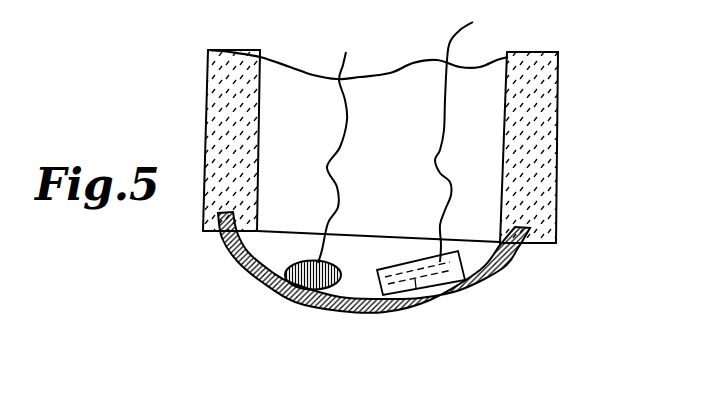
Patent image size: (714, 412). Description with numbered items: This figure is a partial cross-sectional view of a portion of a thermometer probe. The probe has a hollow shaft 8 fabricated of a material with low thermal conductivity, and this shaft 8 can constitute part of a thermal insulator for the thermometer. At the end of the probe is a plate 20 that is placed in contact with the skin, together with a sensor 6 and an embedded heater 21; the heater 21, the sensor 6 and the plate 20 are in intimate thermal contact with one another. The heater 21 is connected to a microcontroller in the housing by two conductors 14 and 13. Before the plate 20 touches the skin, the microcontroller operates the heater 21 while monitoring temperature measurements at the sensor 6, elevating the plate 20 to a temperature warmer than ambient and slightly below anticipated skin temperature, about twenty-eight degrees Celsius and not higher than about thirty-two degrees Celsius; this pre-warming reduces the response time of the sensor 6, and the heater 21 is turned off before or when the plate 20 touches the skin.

The sensor 6 is at (266, 282).
The shaft 8 is at (533, 133).
The conductor 13 is at (337, 78).
The conductor 14 is at (455, 43).
The plate 20 is at (497, 277).
The heater 21 is at (420, 298).